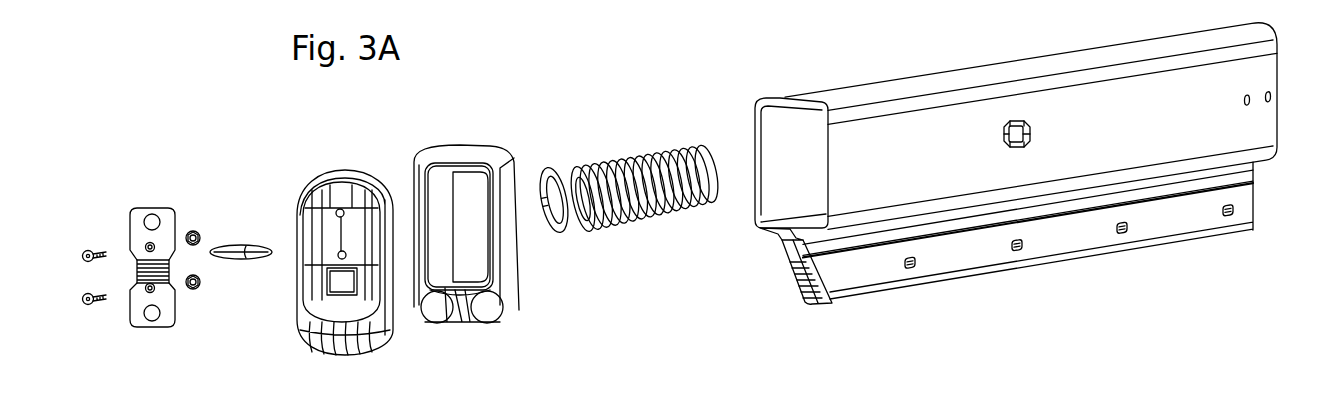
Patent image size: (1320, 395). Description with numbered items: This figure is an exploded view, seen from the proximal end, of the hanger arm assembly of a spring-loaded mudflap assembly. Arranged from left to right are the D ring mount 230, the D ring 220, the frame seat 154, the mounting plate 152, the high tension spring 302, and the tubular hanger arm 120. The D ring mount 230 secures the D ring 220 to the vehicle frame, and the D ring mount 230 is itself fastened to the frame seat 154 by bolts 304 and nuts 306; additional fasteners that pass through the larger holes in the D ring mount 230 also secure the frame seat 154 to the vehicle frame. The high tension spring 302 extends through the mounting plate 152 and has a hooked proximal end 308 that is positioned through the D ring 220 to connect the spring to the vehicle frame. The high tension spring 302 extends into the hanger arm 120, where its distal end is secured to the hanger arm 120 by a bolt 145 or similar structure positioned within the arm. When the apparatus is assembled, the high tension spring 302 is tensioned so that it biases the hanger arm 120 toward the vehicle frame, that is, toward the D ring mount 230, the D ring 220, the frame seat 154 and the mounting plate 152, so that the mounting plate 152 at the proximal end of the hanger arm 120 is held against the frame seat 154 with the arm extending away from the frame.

The hanger arm 120 is at (997, 63).
The bolt 145 is at (1030, 138).
The mounting plate 152 is at (470, 150).
The frame seat 154 is at (343, 172).
The D ring 220 is at (253, 246).
The D ring mount 230 is at (147, 208).
The high tension spring 302 is at (652, 152).
The bolts 304 is at (84, 292).
The nuts 306 is at (188, 283).
The hooked proximal end 308 is at (561, 170).